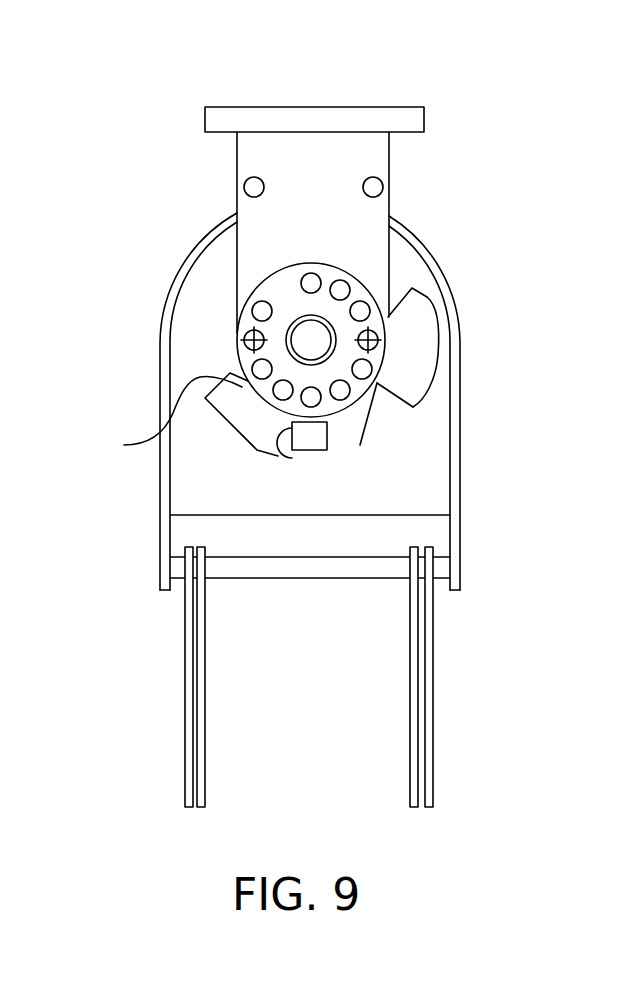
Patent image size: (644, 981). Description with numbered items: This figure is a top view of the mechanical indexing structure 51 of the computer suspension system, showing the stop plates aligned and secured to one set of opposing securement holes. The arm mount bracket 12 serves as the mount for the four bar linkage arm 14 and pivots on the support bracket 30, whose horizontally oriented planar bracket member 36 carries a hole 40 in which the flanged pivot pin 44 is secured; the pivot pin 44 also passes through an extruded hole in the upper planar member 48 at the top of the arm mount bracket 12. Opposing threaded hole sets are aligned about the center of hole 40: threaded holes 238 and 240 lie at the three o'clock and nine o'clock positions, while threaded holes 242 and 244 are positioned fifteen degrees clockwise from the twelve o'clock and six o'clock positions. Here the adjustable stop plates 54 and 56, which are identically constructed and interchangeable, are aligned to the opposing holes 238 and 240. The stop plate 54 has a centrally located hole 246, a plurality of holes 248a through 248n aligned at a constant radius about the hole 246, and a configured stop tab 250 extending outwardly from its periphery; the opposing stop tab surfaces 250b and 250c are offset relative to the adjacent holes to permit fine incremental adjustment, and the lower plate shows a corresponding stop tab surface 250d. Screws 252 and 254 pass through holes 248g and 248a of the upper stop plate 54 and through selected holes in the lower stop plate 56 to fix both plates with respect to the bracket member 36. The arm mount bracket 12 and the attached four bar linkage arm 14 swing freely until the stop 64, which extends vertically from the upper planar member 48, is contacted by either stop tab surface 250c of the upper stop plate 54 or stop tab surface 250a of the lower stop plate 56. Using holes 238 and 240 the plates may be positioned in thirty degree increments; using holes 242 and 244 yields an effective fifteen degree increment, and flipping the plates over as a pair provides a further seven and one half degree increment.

The arm mount bracket 12 is at (481, 337).
The four bar linkage arm 14 is at (449, 657).
The support bracket 30 is at (339, 102).
The horizontally oriented planar bracket member 36 is at (355, 232).
The hole 40 is at (402, 247).
The pivot pin 44 is at (204, 290).
The upper planar member 48 is at (259, 494).
The mechanical indexing structure 51 is at (417, 186).
The adjustable stop plate 54 is at (422, 352).
The adjustable stop plate 56 is at (264, 475).
The stop 64 is at (320, 447).
The threaded hole 238 is at (243, 340).
The threaded hole 240 is at (378, 338).
The threaded hole 242 is at (234, 232).
The threaded hole 244 is at (179, 440).
The centrally located hole 246 is at (238, 340).
The hole 248a is at (458, 374).
The hole 248g is at (163, 335).
The hole 248n is at (455, 260).
The stop tab 250 is at (427, 333).
The stop tab surface 250a is at (275, 462).
The stop tab surface 250b is at (413, 288).
The stop tab surface 250c is at (360, 445).
The finger 250d is at (152, 415).
The screw 252 is at (243, 345).
The screw 254 is at (453, 388).